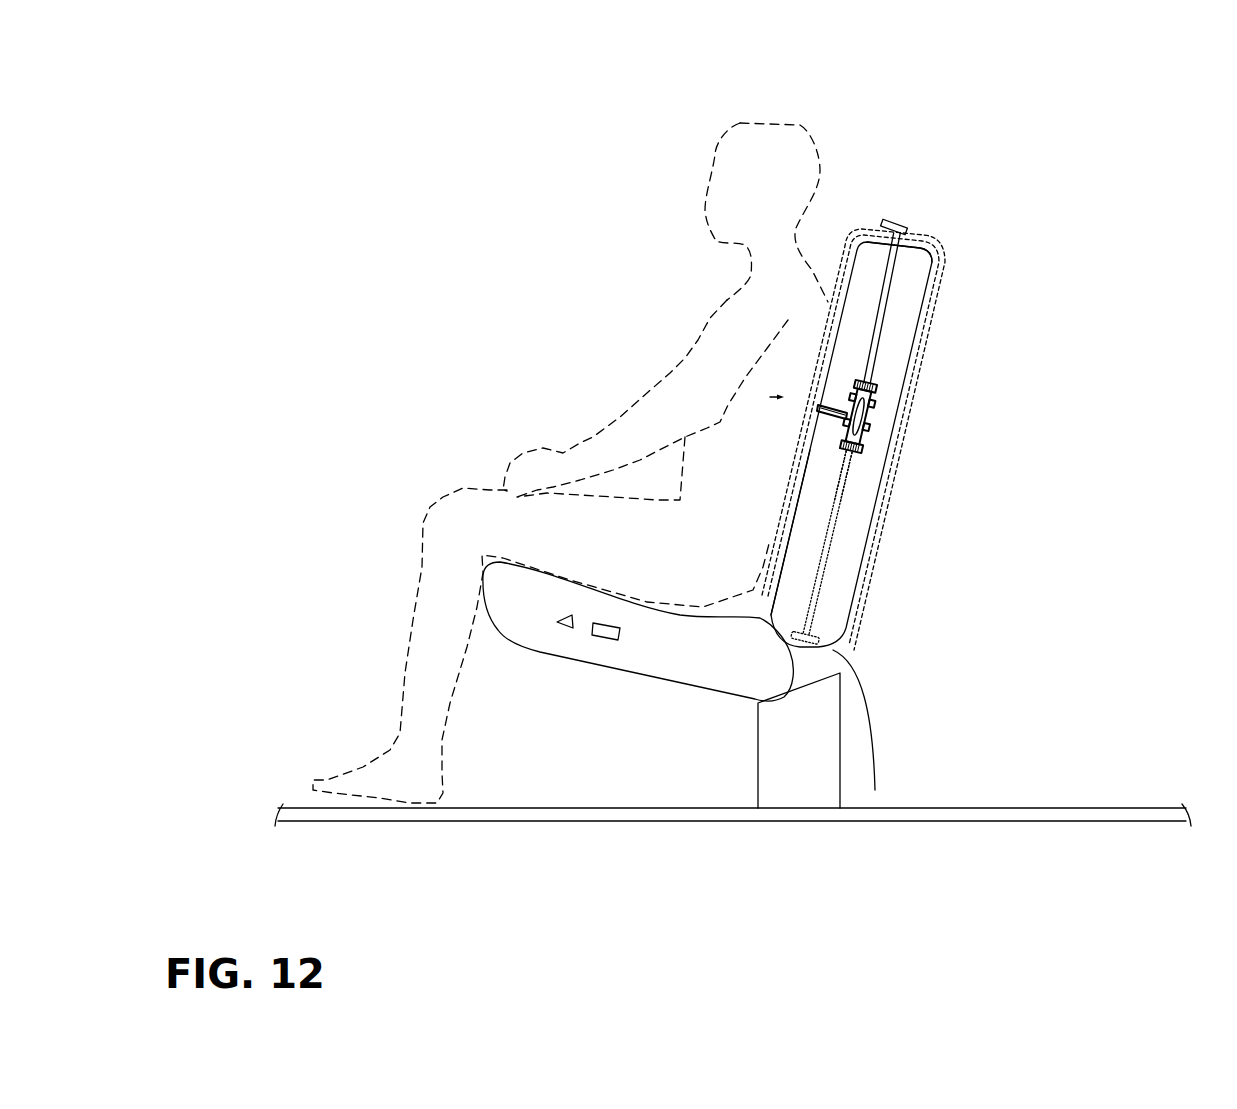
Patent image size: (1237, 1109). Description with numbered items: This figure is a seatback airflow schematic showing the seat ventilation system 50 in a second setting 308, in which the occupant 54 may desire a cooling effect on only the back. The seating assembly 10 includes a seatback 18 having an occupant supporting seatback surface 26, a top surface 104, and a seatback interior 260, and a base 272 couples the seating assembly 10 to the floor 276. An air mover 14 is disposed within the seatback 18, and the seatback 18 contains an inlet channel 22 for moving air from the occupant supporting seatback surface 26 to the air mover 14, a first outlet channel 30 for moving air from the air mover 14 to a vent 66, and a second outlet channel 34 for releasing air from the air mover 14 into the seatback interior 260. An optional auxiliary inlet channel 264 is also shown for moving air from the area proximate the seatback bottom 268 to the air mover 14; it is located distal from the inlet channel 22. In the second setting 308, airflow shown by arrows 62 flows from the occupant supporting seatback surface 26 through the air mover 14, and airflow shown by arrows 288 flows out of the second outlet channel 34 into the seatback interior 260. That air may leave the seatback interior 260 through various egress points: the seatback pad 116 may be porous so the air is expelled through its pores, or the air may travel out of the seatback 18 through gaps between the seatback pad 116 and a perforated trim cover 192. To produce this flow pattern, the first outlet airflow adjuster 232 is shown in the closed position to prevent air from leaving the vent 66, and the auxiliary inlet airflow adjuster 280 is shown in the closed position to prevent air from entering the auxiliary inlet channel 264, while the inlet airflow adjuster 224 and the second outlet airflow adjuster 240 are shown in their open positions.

The seating assembly 10 is at (900, 633).
The air mover 14 is at (865, 445).
The seatback 18 is at (842, 548).
The inlet channel 22 is at (835, 408).
The occupant supporting seatback surface 26 is at (802, 478).
The first outlet channel 30 is at (903, 282).
The second outlet channel 34 is at (880, 406).
The seat ventilation system 50 is at (946, 335).
The occupant 54 is at (747, 123).
The arrows 62 is at (801, 404).
The vent 66 is at (905, 224).
The top surface 104 is at (915, 256).
The seatback pad 116 is at (903, 300).
The perforated trim cover 192 is at (941, 253).
The inlet airflow adjuster 224 is at (850, 392).
The first outlet airflow adjuster 232 is at (854, 381).
The second outlet airflow adjuster 240 is at (884, 410).
The seatback interior 260 is at (886, 414).
The auxiliary inlet channel 264 is at (822, 583).
The seatback bottom 268 is at (875, 790).
The base 272 is at (793, 778).
The floor 276 is at (616, 821).
The auxiliary inlet airflow adjuster 280 is at (856, 452).
The arrows 288 is at (884, 428).
The second setting 308 is at (1143, 334).